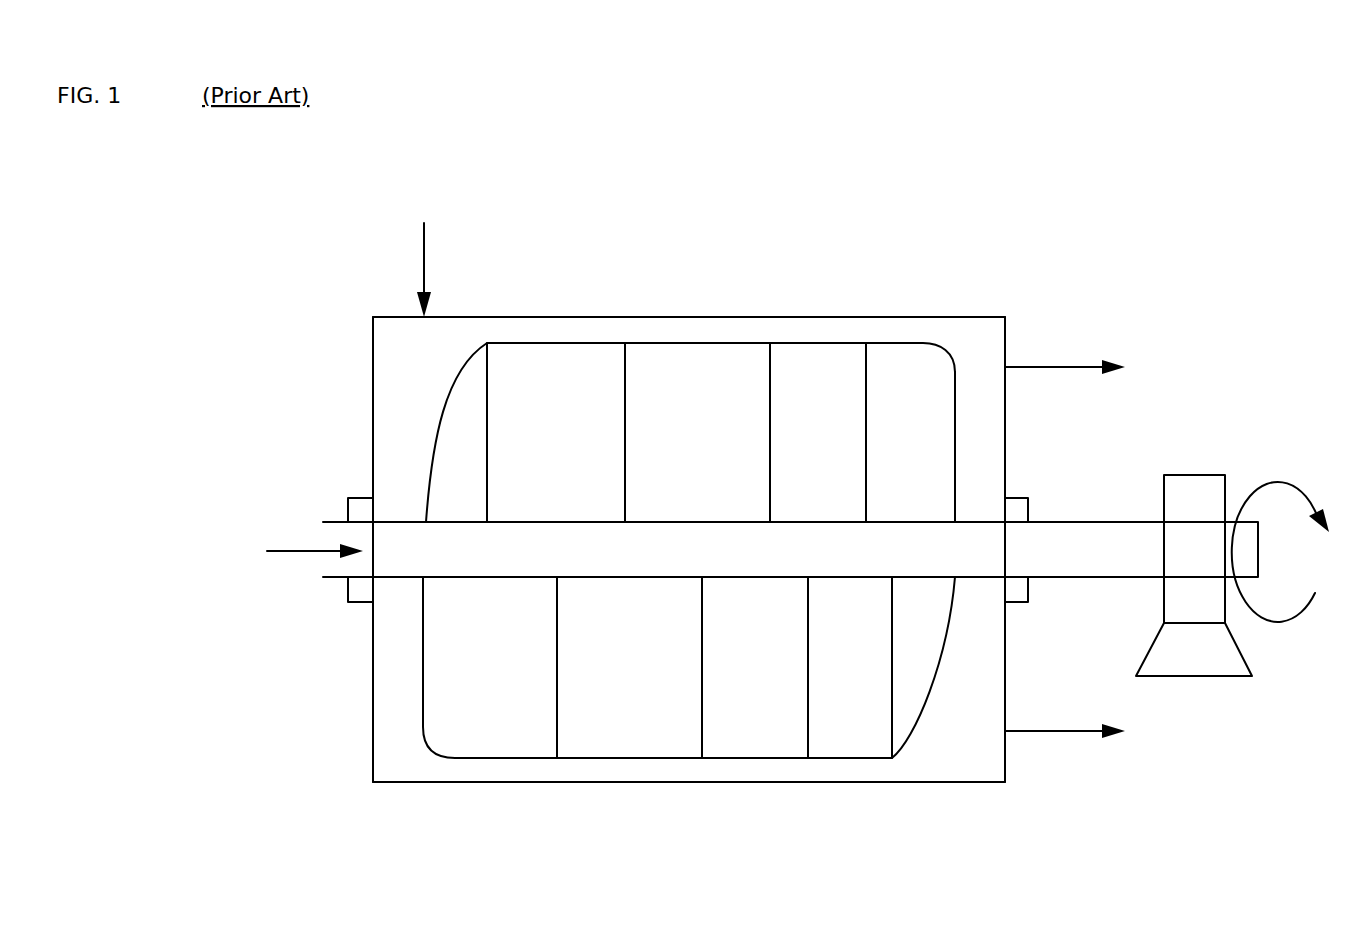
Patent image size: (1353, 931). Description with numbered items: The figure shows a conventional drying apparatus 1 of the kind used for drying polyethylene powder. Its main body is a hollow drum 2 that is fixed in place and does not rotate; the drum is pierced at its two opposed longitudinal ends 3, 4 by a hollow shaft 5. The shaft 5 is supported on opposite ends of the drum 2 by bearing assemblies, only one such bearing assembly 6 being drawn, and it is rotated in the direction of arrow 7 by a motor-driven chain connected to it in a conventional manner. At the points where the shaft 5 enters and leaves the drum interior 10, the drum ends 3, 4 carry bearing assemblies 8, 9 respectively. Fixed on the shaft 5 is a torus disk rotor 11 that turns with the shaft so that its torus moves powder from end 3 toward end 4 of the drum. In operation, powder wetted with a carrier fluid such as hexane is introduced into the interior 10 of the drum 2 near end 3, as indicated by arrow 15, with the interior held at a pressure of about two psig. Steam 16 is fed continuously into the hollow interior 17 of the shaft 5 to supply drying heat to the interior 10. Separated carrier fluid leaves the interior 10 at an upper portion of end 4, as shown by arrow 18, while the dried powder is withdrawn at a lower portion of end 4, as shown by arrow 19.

The drying apparatus 1 is at (903, 224).
The hollow drum 2 is at (697, 317).
The drum end 3 is at (373, 396).
The drum end 4 is at (1005, 442).
The hollow shaft 5 is at (1058, 577).
The bearing assembly 6 is at (1197, 475).
The arrow 7 is at (1280, 616).
The bearing assembly 8 is at (348, 512).
The bearing assembly 9 is at (1028, 512).
The drum interior 10 is at (455, 352).
The torus disk rotor 11 is at (947, 350).
The arrow 15 is at (424, 256).
The steam 16 is at (280, 551).
The hollow interior 17 is at (580, 579).
The arrow 18 is at (1068, 367).
The arrow 19 is at (1068, 731).